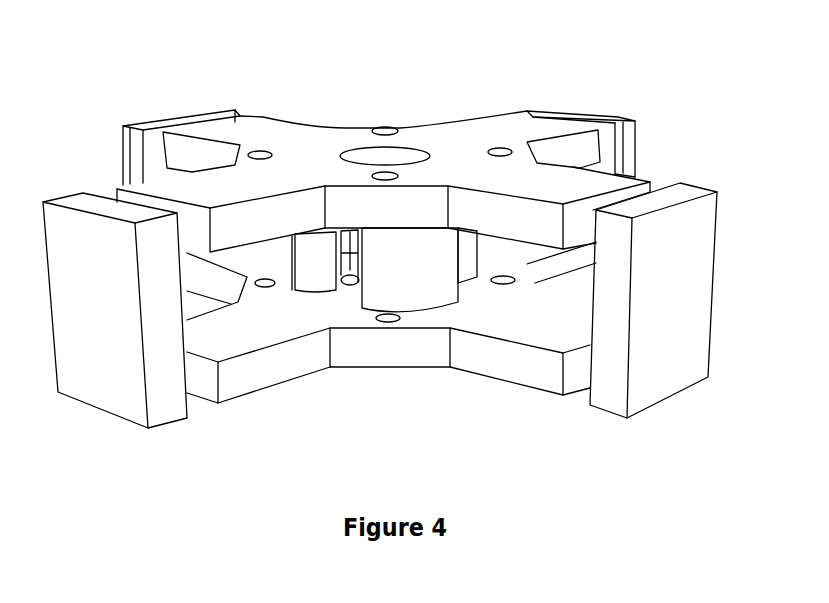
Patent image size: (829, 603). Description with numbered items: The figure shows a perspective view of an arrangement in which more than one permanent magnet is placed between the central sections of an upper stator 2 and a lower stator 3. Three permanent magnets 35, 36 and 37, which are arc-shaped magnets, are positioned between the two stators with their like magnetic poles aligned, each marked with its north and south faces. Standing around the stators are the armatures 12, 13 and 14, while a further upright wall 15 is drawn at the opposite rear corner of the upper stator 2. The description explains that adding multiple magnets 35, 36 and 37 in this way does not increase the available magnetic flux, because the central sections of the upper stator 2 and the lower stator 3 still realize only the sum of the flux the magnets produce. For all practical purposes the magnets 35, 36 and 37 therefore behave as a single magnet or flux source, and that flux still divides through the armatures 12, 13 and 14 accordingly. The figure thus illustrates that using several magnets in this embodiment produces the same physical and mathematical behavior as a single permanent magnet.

The upper stator 2 is at (463, 151).
The lower stator 3 is at (312, 315).
The armature 12 is at (100, 366).
The armature 13 is at (676, 371).
The armature 14 is at (628, 137).
The upright wall 15 is at (221, 110).
The permanent magnet 35 is at (426, 275).
The permanent magnet 36 is at (306, 260).
The permanent magnet 37 is at (481, 251).